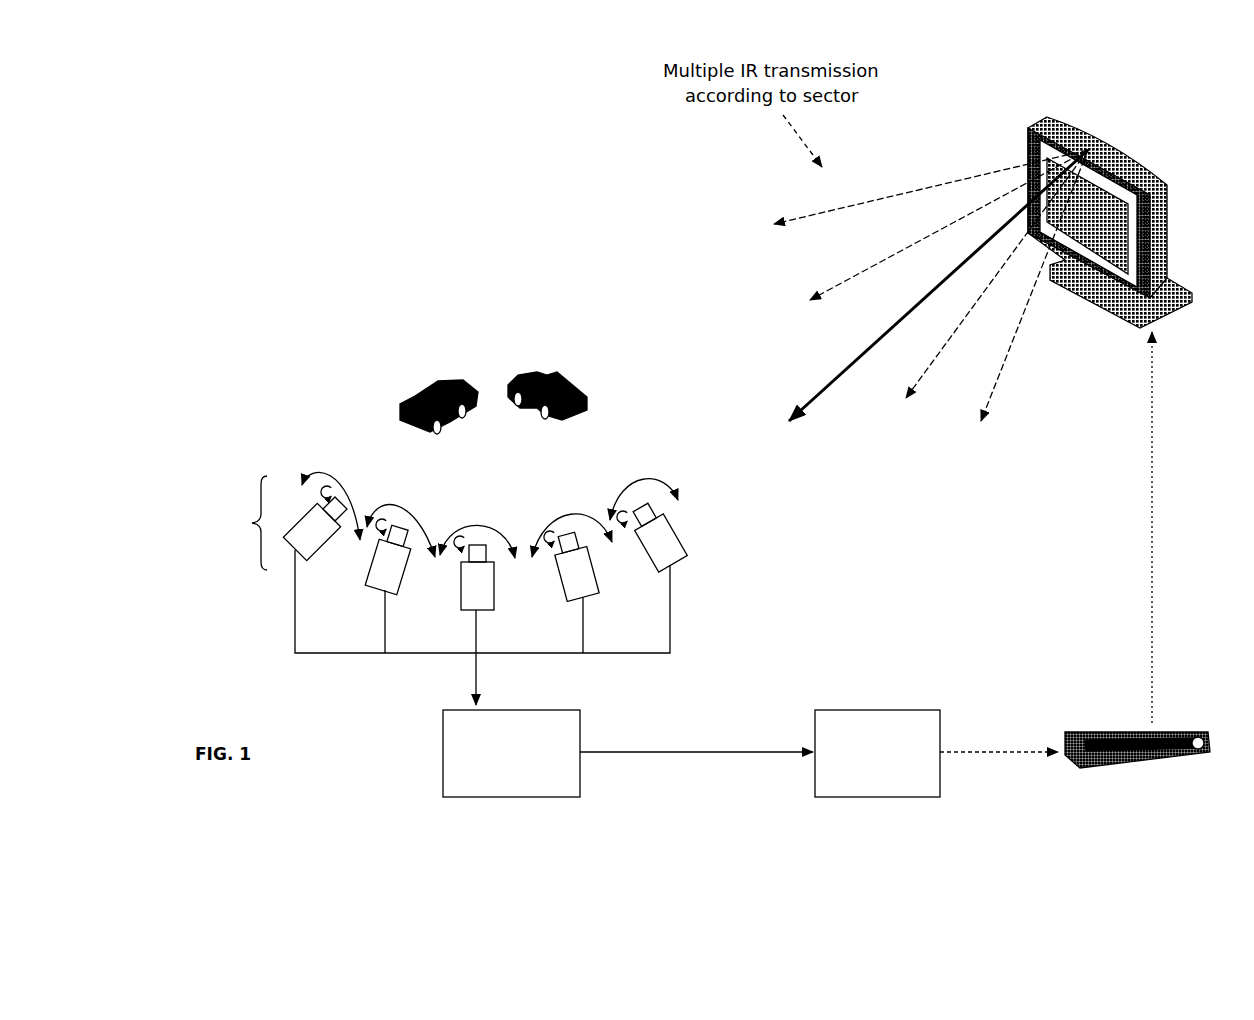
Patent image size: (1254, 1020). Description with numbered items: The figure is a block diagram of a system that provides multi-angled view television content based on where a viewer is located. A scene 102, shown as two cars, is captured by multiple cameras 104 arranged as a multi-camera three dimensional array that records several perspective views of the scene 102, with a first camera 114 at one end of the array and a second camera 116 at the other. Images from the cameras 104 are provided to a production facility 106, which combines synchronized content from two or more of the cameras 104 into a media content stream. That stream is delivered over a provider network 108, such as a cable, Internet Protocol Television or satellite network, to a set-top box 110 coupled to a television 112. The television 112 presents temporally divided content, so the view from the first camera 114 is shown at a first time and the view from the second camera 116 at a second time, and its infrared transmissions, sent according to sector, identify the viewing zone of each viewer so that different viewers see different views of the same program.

The scene 102 is at (393, 350).
The multiple cameras 104 is at (245, 614).
The production facility 106 is at (443, 745).
The provider network 108 is at (815, 725).
The set-top box 110 is at (1097, 732).
The television 112 is at (1042, 117).
The first camera 114 is at (297, 513).
The second camera 116 is at (677, 536).